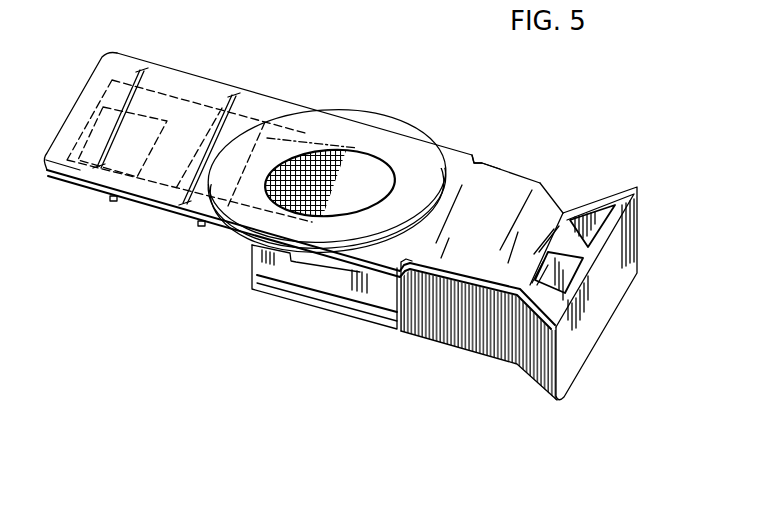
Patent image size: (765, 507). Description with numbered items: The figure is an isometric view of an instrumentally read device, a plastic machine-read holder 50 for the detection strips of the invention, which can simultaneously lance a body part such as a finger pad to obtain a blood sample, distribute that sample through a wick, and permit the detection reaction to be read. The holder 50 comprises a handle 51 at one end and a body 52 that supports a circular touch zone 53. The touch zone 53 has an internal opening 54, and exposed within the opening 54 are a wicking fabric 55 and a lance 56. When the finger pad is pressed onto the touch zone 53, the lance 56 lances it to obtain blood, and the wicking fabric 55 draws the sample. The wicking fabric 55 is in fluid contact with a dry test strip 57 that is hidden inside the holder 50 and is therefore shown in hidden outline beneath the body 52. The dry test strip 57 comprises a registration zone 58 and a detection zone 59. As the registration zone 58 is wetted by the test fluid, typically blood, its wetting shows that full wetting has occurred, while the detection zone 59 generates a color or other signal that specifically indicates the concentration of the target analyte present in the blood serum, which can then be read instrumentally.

The holder 50 is at (552, 161).
The handle 51 is at (640, 193).
The body 52 is at (383, 326).
The circular touch zone 53 is at (488, 164).
The internal opening 54 is at (364, 172).
The wicking fabric 55 is at (318, 178).
The lance 56 is at (318, 178).
The dry test strip 57 is at (164, 93).
The registration zone 58 is at (95, 192).
The detection zone 59 is at (168, 205).